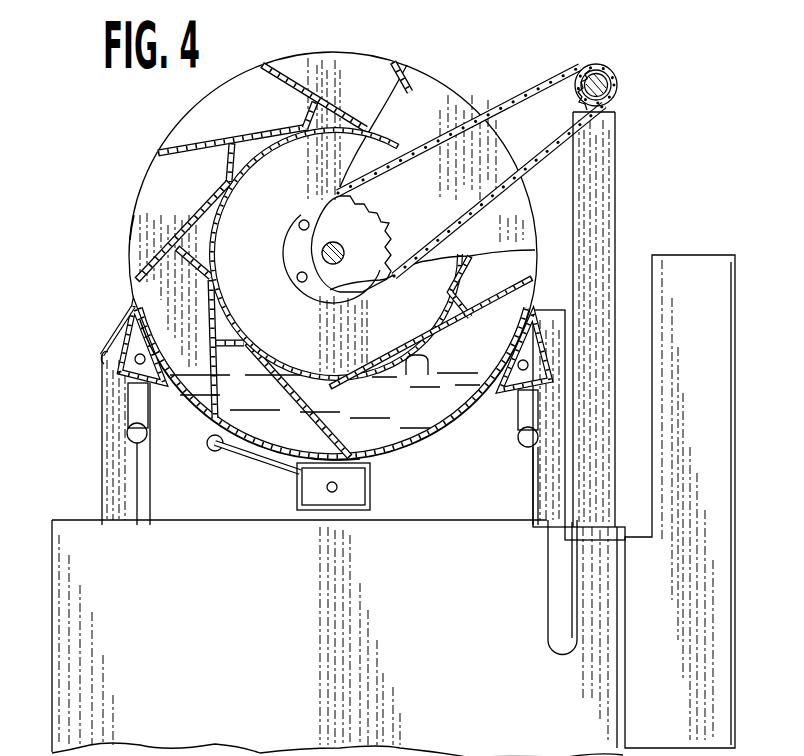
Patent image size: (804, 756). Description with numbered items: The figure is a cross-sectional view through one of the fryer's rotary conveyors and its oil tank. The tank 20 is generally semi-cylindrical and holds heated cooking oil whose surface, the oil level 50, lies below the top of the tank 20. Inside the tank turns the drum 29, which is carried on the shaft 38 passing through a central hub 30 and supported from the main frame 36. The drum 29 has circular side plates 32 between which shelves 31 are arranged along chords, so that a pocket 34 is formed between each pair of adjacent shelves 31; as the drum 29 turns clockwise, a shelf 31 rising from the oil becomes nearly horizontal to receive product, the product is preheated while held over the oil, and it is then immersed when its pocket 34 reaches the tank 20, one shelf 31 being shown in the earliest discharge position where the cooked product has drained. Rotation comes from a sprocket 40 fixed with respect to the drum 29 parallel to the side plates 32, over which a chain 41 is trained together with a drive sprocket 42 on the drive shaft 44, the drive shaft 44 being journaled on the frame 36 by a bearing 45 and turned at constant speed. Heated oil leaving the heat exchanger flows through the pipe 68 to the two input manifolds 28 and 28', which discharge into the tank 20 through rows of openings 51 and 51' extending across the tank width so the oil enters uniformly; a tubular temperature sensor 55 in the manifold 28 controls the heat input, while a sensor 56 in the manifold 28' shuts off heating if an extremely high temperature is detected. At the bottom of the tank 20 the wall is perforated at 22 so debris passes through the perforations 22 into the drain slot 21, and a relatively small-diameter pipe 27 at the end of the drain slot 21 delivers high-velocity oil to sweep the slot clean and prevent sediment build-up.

The tank 20 is at (427, 437).
The drain slot 21 is at (372, 493).
The perforations 22 is at (347, 457).
The pipe 27 is at (290, 478).
The input manifold 28 is at (110, 350).
The input manifold 28' is at (557, 335).
The rotary conveyor (drum) 29 is at (393, 53).
The hub 30 is at (237, 170).
The shelf (vane) 31 is at (243, 147).
The side plate 32 is at (153, 202).
The pocket 34 is at (362, 97).
The main frame 36 is at (112, 494).
The shaft 38 is at (332, 263).
The sprocket 40 is at (378, 216).
The chain 41 is at (498, 108).
The drive sprocket 42 is at (592, 62).
The drive shaft 44 is at (612, 73).
The bearing 45 is at (577, 106).
The oil level 50 is at (402, 358).
The openings (row of holes) 51 is at (168, 322).
The openings (row of holes) 51' is at (476, 308).
The temperature sensor 55 is at (140, 350).
The temperature sensor 56 is at (510, 390).
The pipe 68 is at (560, 590).